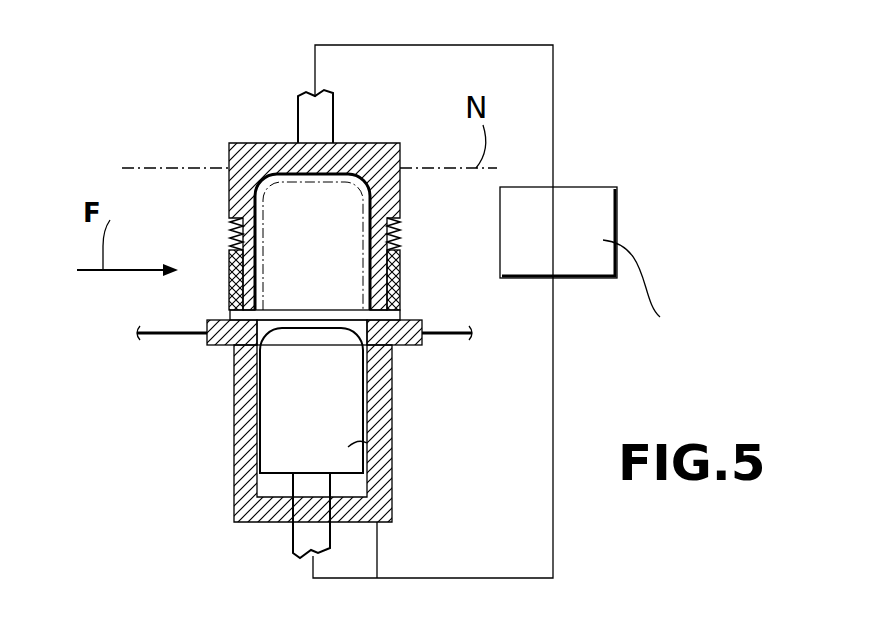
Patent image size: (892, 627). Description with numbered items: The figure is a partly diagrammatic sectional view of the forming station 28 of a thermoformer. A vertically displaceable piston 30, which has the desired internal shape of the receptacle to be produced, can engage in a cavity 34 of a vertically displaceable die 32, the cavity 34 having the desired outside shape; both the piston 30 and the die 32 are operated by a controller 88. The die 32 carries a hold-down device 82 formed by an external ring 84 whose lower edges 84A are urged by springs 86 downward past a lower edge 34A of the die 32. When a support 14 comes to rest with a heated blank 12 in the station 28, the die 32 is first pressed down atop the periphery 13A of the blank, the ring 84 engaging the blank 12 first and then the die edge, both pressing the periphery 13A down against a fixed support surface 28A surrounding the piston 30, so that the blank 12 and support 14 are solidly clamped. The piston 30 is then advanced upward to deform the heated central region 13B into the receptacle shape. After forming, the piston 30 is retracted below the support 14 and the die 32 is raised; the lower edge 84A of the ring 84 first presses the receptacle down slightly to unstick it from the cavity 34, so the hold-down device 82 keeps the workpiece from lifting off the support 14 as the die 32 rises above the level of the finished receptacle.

The heated blank 12 is at (293, 296).
The periphery of the blank 13A is at (395, 347).
The heated central region 13B is at (277, 318).
The support 14 is at (233, 347).
The station 28 is at (248, 500).
The fixed support surface 28A is at (248, 368).
The piston 30 is at (393, 467).
The die 32 is at (258, 143).
The cavity 34 is at (357, 208).
The lower edge of the die 34A is at (400, 278).
The hold-down device 82 is at (133, 190).
The external ring 84 is at (232, 257).
The lower edge of the ring 84A is at (232, 313).
The springs 86 is at (233, 228).
The controller 88 is at (608, 187).